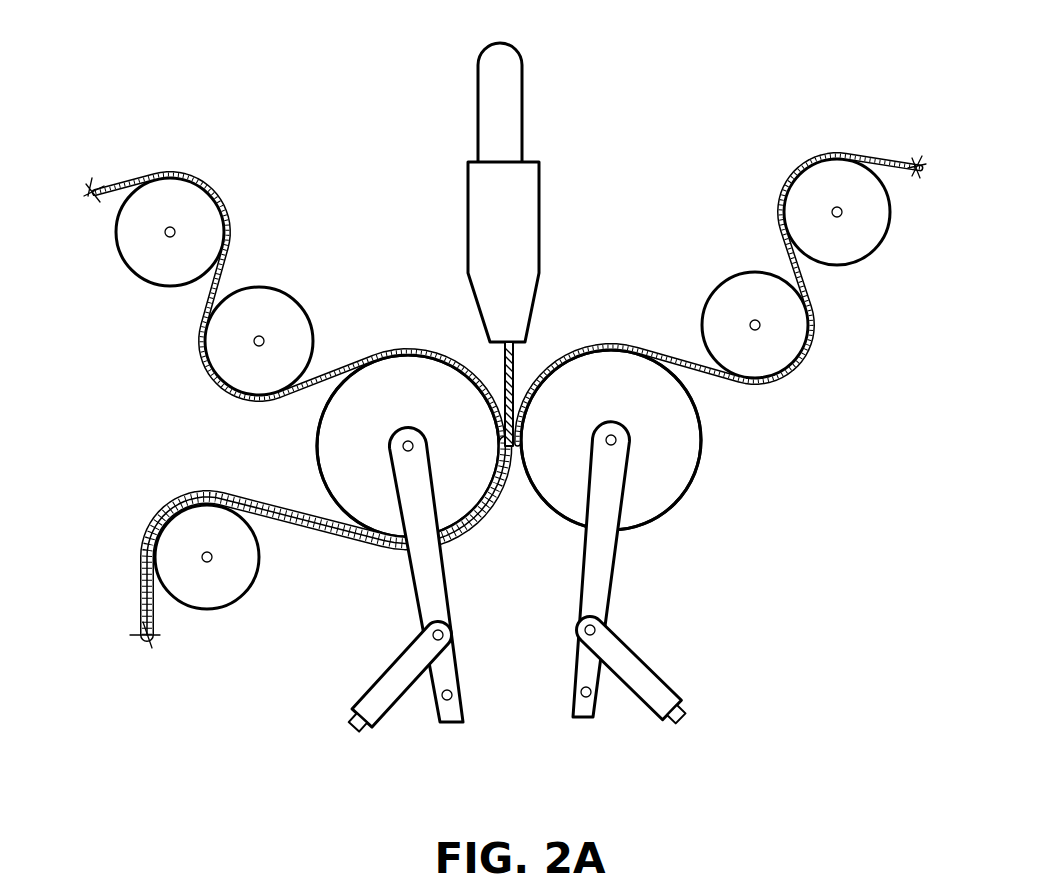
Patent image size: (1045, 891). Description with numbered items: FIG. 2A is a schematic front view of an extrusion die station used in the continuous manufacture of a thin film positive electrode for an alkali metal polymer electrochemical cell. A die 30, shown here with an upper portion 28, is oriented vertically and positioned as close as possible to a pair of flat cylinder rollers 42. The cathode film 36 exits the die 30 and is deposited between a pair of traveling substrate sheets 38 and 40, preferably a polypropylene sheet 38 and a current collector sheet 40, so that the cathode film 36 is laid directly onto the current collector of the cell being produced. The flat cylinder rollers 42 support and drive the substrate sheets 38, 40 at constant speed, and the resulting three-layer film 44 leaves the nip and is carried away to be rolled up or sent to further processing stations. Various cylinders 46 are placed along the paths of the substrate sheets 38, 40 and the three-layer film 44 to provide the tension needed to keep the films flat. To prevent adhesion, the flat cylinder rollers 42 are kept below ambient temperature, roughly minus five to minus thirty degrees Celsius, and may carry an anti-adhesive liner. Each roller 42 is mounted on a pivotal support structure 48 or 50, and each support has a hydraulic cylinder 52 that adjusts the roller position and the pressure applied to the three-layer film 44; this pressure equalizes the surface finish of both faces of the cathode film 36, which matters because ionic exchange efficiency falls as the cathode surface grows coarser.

The applicator rod 28 is at (512, 85).
The die 30 is at (492, 190).
The cathode film 36 is at (515, 362).
The polypropylene sheet 38 is at (338, 372).
The current collector sheet 40 is at (683, 362).
The flat cylinder rollers 42 is at (332, 443).
The three-layer film 44 is at (313, 537).
The cylinders 46 is at (143, 258).
The pivotal support structure 48 is at (601, 598).
The pivotal support structure 50 is at (433, 578).
The hydraulic cylinder 52 is at (393, 680).